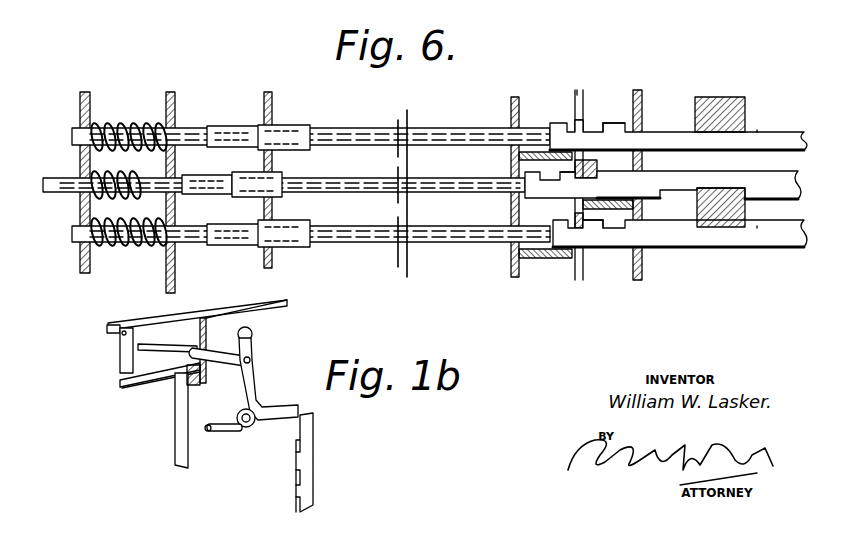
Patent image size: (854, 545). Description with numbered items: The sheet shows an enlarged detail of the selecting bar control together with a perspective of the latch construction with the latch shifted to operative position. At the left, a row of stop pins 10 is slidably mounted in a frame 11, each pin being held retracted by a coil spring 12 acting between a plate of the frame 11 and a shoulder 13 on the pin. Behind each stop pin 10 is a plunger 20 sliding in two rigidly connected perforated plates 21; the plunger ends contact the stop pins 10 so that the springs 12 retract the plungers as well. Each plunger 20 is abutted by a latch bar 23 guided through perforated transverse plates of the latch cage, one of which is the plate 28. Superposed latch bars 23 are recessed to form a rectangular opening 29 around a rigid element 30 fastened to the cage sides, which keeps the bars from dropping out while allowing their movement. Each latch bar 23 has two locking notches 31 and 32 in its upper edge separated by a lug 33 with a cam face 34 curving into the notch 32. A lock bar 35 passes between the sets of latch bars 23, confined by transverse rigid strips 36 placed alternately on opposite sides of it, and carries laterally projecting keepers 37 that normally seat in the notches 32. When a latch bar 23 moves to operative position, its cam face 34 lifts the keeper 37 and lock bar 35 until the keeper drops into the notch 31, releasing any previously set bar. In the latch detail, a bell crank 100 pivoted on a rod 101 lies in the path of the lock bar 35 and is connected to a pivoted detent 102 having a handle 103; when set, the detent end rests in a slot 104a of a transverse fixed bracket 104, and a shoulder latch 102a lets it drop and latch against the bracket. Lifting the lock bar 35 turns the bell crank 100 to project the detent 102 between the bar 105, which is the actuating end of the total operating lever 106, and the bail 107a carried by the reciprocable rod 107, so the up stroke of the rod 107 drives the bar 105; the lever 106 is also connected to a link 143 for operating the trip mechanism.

In FIG. 6, the stop pin 10 is at (187, 132).
In FIG. 6, the frame 11 is at (80, 260).
In FIG. 6, the coil spring 12 is at (112, 125).
In FIG. 6, the shoulder 13 is at (167, 117).
In FIG. 6, the plunger 20 is at (387, 140).
In FIG. 6, the perforated plate 21 is at (267, 107).
In FIG. 6, the latch bar 23 is at (666, 185).
In FIG. 6, the transverse plate 28 is at (637, 282).
In FIG. 6, the rectangular opening 29 is at (757, 130).
In FIG. 6, the rigid element 30 is at (722, 92).
In FIG. 6, the locking notch 31 is at (620, 130).
In FIG. 6, the locking notch 32 is at (573, 218).
In FIG. 6, the lug 33 is at (603, 128).
In FIG. 6, the cam face 34 is at (588, 130).
In FIG. 6, the lock bar 35 is at (577, 95).
In FIG. 1B, the lock bar 35 is at (297, 450).
In FIG. 6, the transverse rigid strip 36 is at (519, 157).
In FIG. 6, the keeper 37 is at (575, 125).
In FIG. 1B, the keeper 37 is at (296, 478).
In FIG. 1B, the bell crank 100 is at (240, 401).
In FIG. 1B, the rod 101 is at (228, 431).
In FIG. 1B, the pivoted detent 102 is at (225, 359).
In FIG. 1B, the shoulder latch 102a is at (124, 380).
In FIG. 1B, the handle 103 is at (255, 338).
In FIG. 1B, the transverse fixed bracket 104 is at (230, 320).
In FIG. 1B, the slot 104a is at (228, 336).
In FIG. 1B, the bar 105 is at (168, 343).
In FIG. 1B, the total operating lever 106 is at (107, 330).
In FIG. 1B, the reciprocable rod 107 is at (175, 423).
In FIG. 1B, the bail 107a is at (135, 393).
In FIG. 1B, the link 143 is at (120, 355).